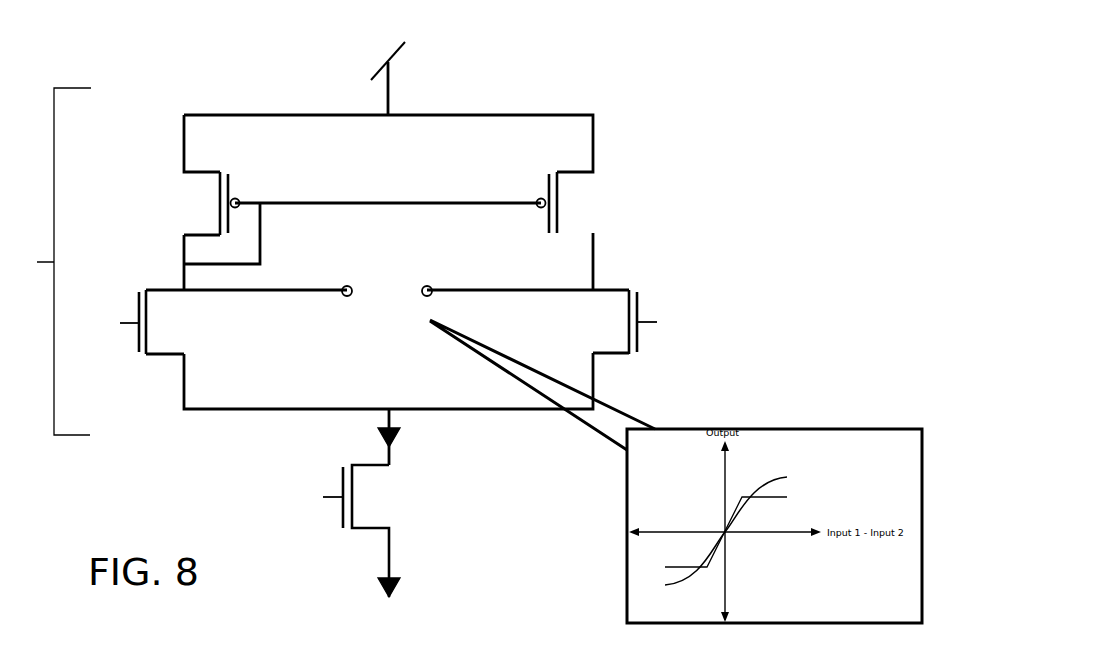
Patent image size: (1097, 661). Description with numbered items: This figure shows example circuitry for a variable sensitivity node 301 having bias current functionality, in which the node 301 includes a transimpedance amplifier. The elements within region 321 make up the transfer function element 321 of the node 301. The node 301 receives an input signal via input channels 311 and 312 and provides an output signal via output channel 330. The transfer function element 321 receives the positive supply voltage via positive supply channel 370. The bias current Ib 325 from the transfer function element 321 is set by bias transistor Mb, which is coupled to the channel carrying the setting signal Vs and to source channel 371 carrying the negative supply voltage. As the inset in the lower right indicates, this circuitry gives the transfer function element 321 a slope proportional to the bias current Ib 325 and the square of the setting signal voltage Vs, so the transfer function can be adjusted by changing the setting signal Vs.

The variable sensitivity node 301 is at (660, 56).
The positive supply channel 370 is at (390, 97).
The transfer function element 321 is at (280, 261).
The input channel 311 is at (95, 343).
The input channel 312 is at (673, 343).
The output channel 330 is at (388, 320).
The bias current Ib 325 is at (392, 413).
The source channel 371 is at (392, 535).